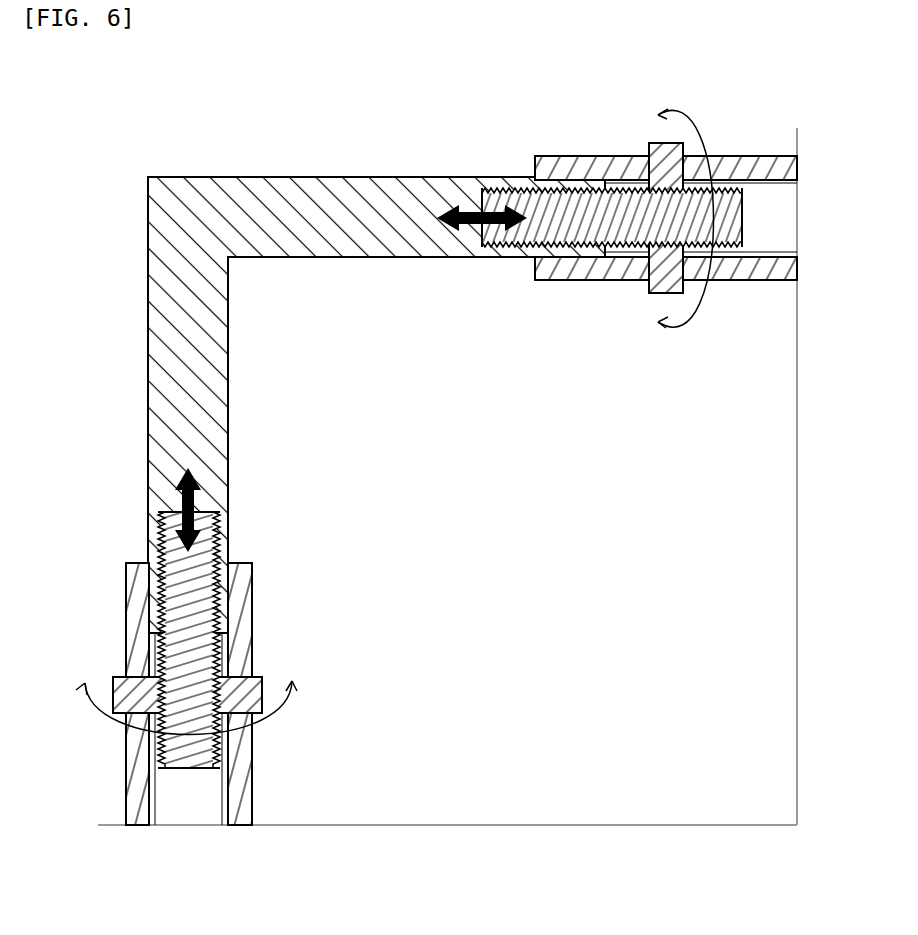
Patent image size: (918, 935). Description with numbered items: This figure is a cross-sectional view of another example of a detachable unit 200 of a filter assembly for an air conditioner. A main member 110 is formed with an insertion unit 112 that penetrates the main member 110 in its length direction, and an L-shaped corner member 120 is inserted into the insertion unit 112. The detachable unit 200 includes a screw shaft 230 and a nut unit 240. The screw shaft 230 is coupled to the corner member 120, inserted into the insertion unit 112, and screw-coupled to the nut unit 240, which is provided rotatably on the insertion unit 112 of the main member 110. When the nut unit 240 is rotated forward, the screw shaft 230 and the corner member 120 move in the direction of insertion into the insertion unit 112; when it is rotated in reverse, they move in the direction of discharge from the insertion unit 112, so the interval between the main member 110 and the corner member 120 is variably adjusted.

The main member 110 is at (747, 116).
The insertion unit 112 is at (766, 212).
The corner member 120 is at (190, 133).
The detachable unit 200 is at (747, 900).
The screw shaft 230 is at (568, 215).
The nut unit 240 is at (647, 142).